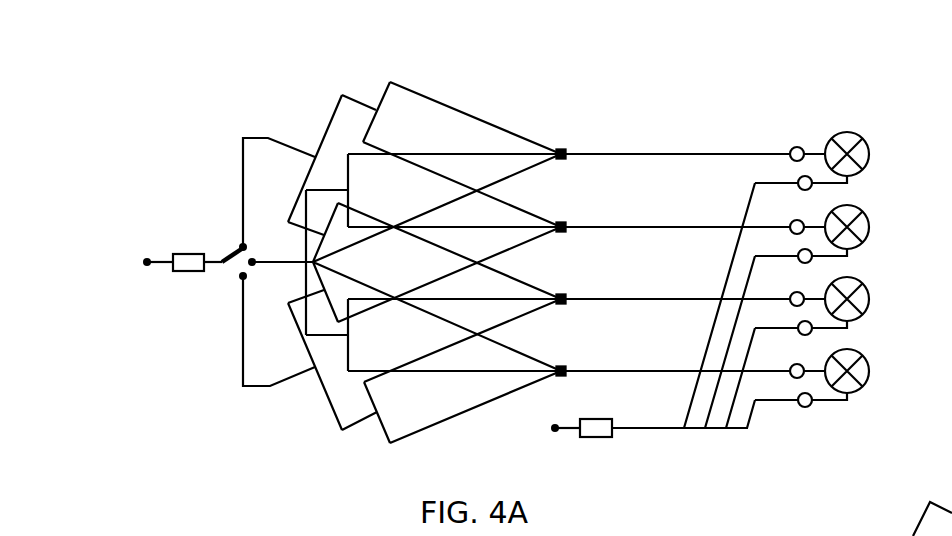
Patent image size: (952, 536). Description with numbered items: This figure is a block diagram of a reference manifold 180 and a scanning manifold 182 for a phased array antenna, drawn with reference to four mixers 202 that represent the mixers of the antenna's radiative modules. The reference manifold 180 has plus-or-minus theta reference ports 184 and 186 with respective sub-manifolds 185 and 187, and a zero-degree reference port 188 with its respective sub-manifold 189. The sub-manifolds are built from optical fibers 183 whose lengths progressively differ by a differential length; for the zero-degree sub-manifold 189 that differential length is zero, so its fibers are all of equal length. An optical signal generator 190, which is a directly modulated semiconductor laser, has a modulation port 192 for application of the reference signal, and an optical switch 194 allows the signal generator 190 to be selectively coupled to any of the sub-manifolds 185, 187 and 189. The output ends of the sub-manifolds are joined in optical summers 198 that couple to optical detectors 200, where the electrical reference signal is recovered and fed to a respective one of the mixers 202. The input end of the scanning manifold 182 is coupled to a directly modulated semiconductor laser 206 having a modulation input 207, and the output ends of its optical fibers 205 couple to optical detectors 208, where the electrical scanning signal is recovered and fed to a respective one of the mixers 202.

The reference manifold 180 is at (686, 146).
The scanning manifold 182 is at (704, 443).
The optical fibers 183 is at (520, 200).
The reference port 184 is at (241, 278).
The sub-manifold 185 is at (427, 440).
The reference port 186 is at (248, 245).
The sub-manifold 187 is at (447, 98).
The 0° reference port 188 is at (254, 266).
The sub-manifold 189 is at (351, 384).
The optical signal generator 190 is at (186, 272).
The modulation port 192 is at (147, 256).
The optical switch 194 is at (232, 246).
The optical summers 198 is at (566, 148).
The optical detectors 200 is at (797, 146).
The mixers 202 is at (868, 168).
The optical fibers 205 is at (735, 245).
The directly modulated semiconductor laser 206 is at (593, 437).
The modulation input 207 is at (555, 428).
The optical detectors 208 is at (805, 407).